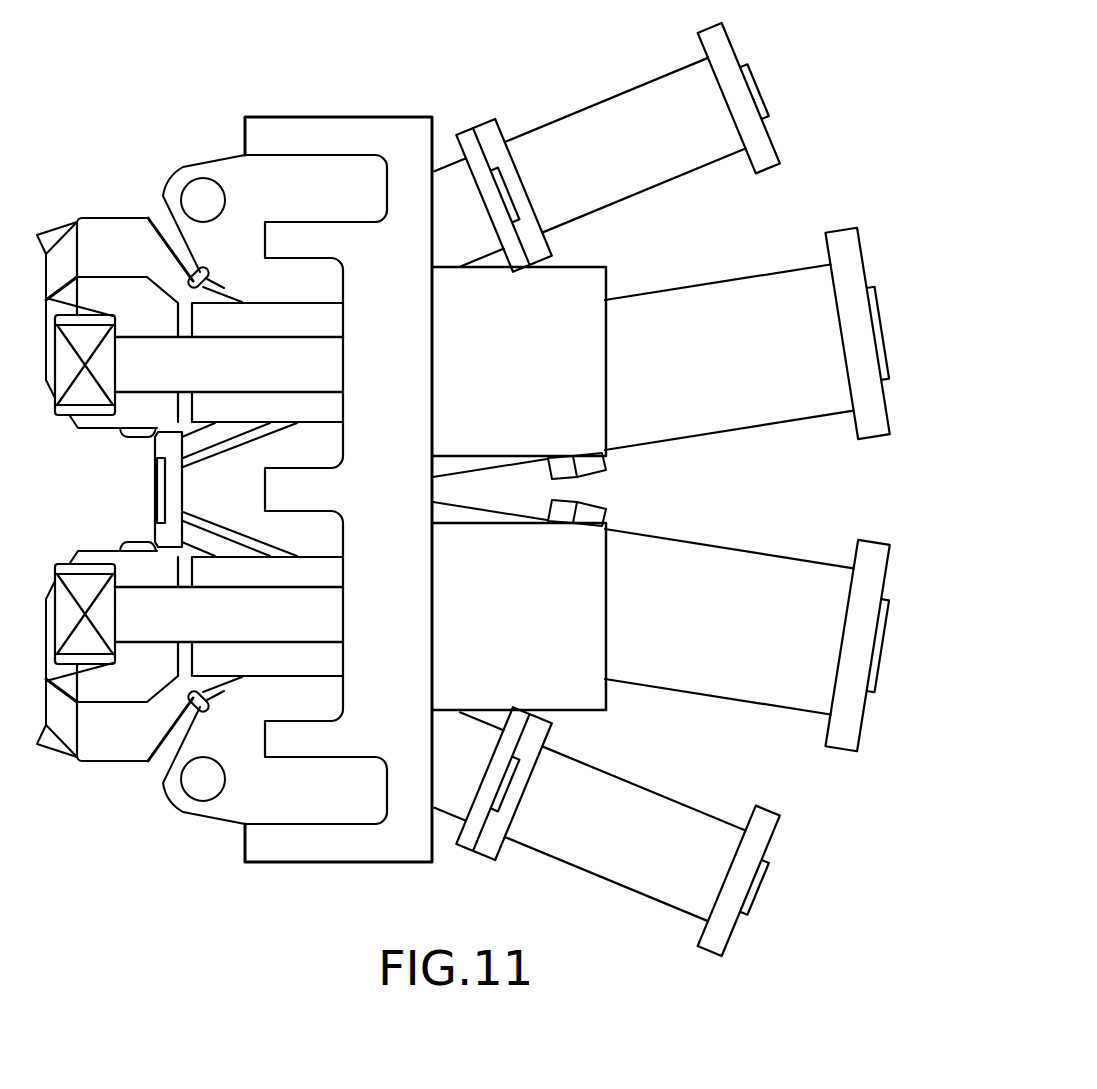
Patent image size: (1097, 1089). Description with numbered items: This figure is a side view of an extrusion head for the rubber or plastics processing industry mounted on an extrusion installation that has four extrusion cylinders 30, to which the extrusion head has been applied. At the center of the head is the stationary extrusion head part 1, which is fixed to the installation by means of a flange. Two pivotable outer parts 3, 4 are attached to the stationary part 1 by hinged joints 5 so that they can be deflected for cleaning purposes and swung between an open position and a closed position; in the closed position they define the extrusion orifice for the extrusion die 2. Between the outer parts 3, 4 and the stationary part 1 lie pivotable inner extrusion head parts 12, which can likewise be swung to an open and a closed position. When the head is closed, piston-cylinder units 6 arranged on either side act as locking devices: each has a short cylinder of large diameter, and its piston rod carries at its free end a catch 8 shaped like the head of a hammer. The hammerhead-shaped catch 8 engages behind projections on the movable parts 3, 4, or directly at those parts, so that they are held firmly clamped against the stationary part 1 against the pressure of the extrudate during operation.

The stationary extrusion head part 1 is at (308, 532).
The extrusion die 2 is at (172, 485).
The pivotable hinged outer part 3 is at (107, 225).
The pivotable hinged outer part 4 is at (122, 752).
The hinged joint 5 is at (205, 188).
The piston-cylinder unit 6 is at (590, 540).
The catch 8 is at (80, 340).
The pivotable inner extrusion head part 12 is at (180, 444).
The extrusion cylinder 30 is at (650, 183).